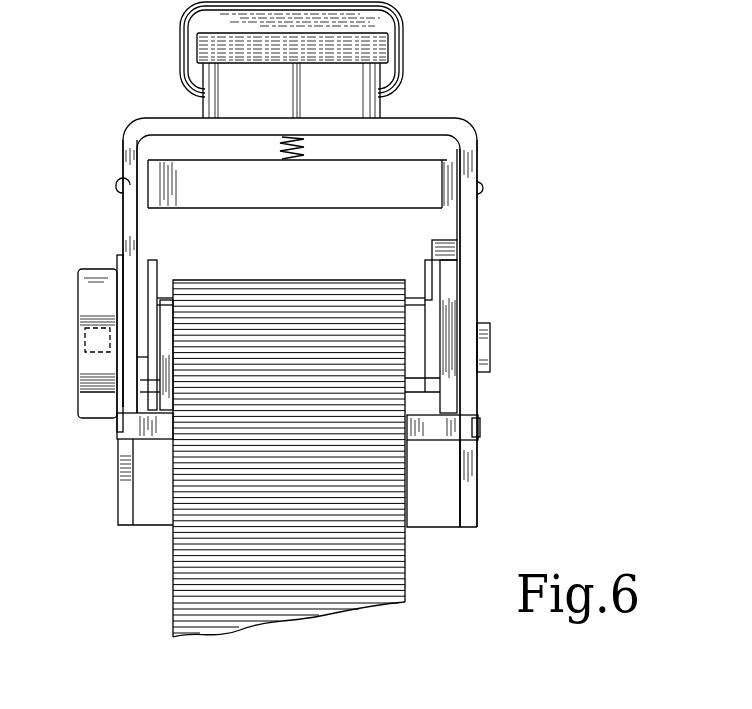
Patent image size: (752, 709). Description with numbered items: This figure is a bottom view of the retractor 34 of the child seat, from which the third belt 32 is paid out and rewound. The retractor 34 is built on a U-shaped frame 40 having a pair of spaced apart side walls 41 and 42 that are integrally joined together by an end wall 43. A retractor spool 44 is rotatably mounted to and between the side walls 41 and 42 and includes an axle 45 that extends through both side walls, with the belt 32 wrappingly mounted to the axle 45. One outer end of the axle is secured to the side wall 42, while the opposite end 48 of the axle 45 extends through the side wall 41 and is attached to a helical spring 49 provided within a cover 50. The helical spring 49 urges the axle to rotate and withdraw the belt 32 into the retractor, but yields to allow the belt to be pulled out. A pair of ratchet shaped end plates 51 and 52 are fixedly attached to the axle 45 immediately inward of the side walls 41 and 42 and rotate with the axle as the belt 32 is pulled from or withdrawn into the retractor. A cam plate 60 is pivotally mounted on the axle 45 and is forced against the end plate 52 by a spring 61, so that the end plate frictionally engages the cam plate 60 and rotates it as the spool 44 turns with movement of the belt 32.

The third belt 32 is at (406, 576).
The retractor 34 is at (488, 128).
The U-shaped frame 40 is at (123, 152).
The side wall 41 is at (128, 228).
The side wall 42 is at (470, 217).
The end wall 43 is at (414, 124).
The retractor spool 44 is at (163, 298).
The axle 45 is at (132, 330).
The opposite end 48 is at (85, 346).
The helical spring 49 is at (78, 400).
The cover 50 is at (97, 422).
The ratchet shaped end plate 51 is at (153, 258).
The ratchet shaped end plate 52 is at (426, 268).
The cam plate 60 is at (440, 284).
The spring 61 is at (456, 380).